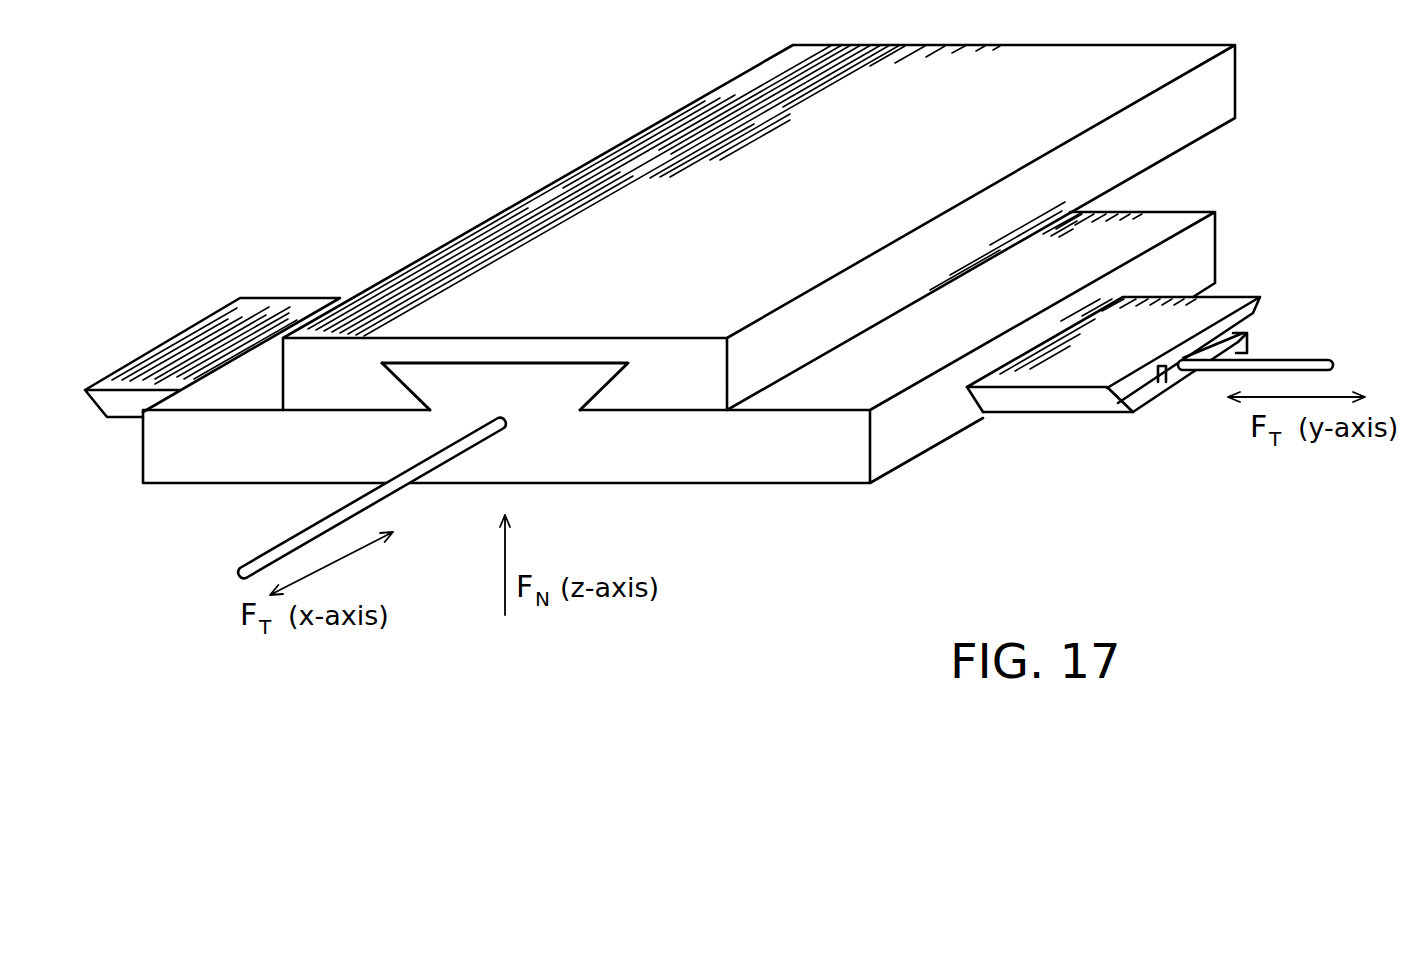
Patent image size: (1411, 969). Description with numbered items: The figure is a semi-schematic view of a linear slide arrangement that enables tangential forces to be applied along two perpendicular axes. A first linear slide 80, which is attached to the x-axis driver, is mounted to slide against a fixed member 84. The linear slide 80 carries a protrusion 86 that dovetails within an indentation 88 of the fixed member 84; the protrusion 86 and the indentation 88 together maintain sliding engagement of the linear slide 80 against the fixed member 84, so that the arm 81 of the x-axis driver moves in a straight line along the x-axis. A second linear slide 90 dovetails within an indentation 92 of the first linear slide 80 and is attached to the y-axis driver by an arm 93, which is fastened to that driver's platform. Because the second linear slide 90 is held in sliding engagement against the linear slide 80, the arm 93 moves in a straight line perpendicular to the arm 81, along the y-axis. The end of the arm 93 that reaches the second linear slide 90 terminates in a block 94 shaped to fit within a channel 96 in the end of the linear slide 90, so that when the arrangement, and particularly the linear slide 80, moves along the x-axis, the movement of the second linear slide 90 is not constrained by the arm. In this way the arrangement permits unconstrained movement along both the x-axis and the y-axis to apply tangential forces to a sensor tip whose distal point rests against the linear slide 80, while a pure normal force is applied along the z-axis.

The linear slide 80 is at (737, 484).
The arm 81 is at (283, 548).
The fixed member 84 is at (655, 123).
The protrusion 86 is at (483, 407).
The indentation 88 is at (388, 375).
The second linear slide 90 is at (1024, 405).
The indentation 92 is at (968, 395).
The arm 93 is at (1297, 358).
The block 94 is at (1160, 378).
The channel 96 is at (1117, 401).